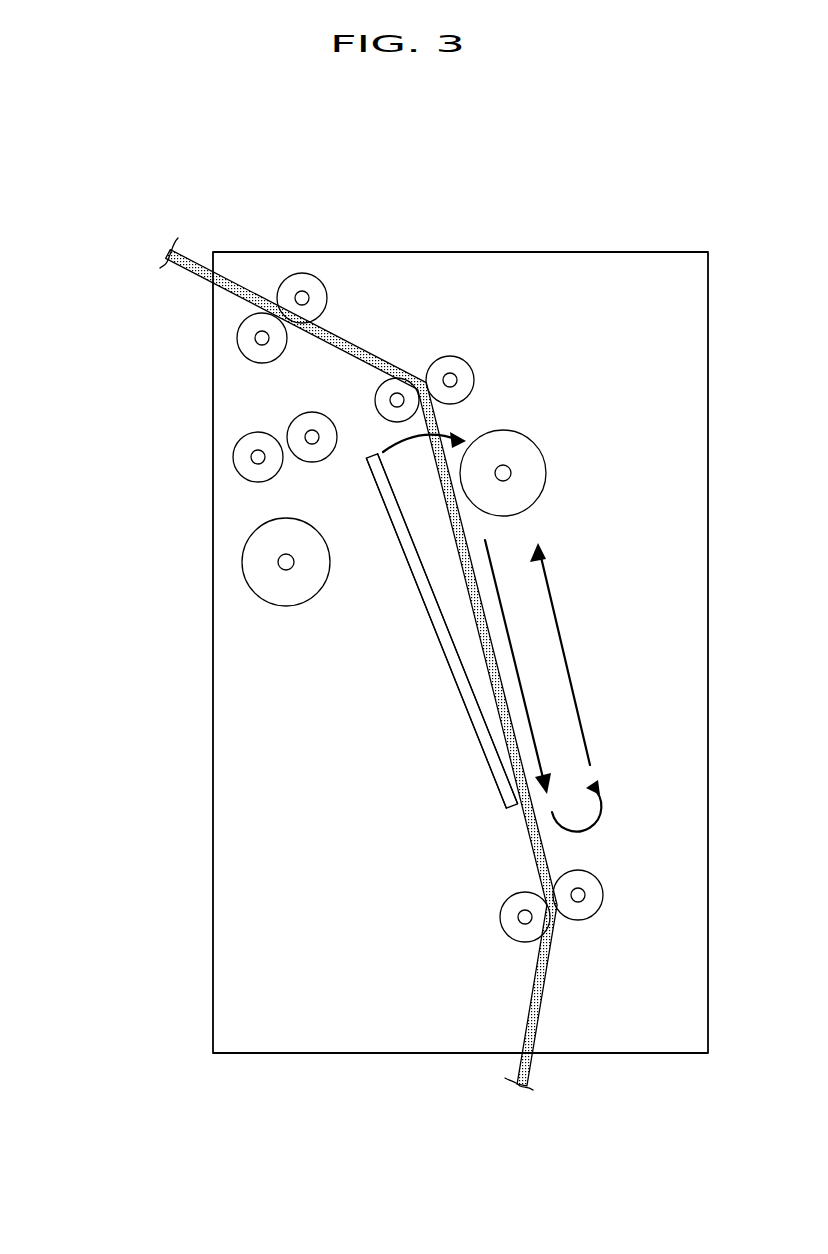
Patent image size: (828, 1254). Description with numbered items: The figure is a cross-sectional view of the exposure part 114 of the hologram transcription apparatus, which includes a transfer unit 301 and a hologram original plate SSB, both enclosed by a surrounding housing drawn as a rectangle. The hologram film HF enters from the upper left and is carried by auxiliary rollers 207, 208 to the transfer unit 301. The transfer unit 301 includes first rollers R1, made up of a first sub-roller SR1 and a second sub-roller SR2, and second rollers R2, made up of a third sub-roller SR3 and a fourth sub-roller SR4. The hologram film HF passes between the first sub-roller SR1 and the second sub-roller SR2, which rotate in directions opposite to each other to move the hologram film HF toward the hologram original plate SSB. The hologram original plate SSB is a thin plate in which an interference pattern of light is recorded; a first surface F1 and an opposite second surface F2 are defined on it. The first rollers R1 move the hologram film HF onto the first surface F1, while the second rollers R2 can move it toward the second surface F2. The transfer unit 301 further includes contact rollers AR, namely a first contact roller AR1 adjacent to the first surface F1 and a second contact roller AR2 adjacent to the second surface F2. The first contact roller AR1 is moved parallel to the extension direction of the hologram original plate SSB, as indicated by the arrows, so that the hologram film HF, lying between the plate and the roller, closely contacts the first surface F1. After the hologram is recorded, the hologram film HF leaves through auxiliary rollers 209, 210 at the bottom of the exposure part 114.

The exposure part 114 is at (630, 208).
The auxiliary roller 207 is at (303, 276).
The auxiliary roller 208 is at (238, 338).
The transfer unit 301 is at (90, 382).
The first rollers R1 is at (143, 365).
The second rollers R2 is at (143, 427).
The contact rollers AR is at (143, 498).
The first sub-roller SR1 is at (378, 393).
The second sub-roller SR2 is at (438, 365).
The third sub-roller SR3 is at (234, 458).
The fourth sub-roller SR4 is at (297, 420).
The first contact roller AR1 is at (462, 473).
The second contact roller AR2 is at (243, 559).
The first surface F1 is at (434, 587).
The second surface F2 is at (432, 620).
The hologram original plate SSB is at (456, 663).
The hologram film HF is at (532, 843).
The auxiliary roller 209 is at (508, 915).
The auxiliary roller 210 is at (595, 888).